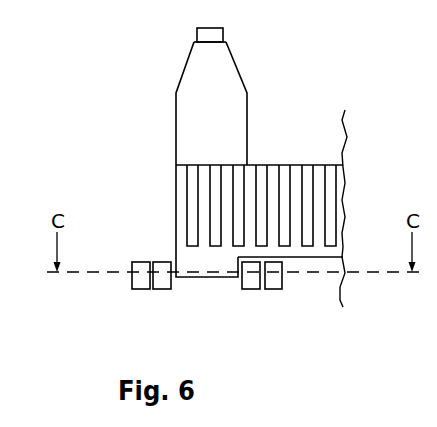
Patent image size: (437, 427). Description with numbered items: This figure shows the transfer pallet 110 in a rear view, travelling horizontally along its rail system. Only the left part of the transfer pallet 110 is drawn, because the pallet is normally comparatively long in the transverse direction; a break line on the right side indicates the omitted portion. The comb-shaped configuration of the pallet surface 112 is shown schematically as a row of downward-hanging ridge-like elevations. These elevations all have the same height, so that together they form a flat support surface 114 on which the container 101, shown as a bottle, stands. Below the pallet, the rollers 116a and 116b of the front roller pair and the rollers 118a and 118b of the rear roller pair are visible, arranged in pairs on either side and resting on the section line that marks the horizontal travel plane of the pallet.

The container 101 is at (184, 69).
The transfer pallet 110 is at (322, 126).
The pallet surface 112 is at (160, 165).
The support surface 114 is at (254, 165).
The roller 116a is at (252, 289).
The roller 116b is at (162, 289).
The roller 118a is at (272, 289).
The roller 118b is at (140, 289).